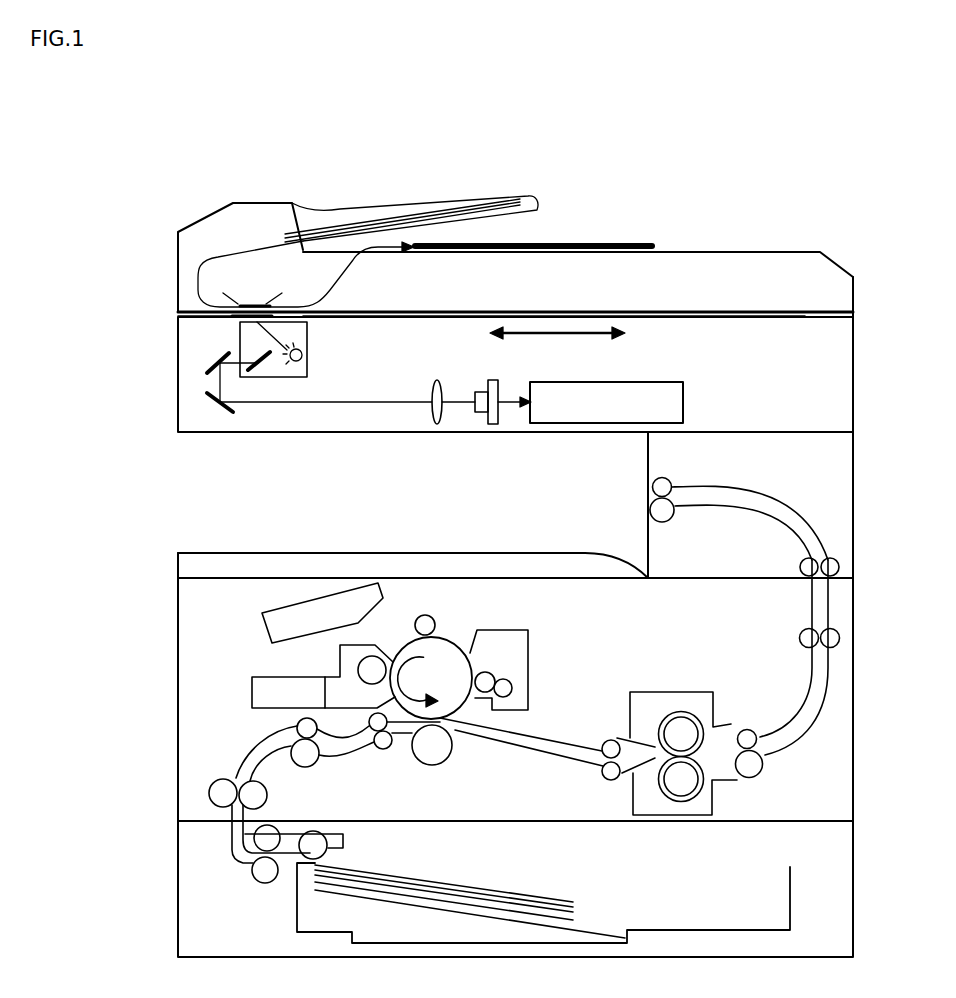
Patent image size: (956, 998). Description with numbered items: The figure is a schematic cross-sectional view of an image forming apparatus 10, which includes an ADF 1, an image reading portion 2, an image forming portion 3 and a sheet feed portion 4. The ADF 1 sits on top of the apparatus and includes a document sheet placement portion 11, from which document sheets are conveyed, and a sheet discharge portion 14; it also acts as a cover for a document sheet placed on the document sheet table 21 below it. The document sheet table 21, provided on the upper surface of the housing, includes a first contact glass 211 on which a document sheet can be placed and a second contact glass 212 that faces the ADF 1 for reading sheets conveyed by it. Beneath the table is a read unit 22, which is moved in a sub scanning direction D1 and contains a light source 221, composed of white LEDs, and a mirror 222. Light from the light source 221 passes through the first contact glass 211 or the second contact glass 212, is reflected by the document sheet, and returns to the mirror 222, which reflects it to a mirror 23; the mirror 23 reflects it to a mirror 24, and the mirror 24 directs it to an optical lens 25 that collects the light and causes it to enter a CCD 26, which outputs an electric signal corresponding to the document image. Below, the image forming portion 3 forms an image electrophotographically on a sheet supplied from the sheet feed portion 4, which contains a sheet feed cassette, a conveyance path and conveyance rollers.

The image forming apparatus 10 is at (170, 162).
The ADF 1 is at (178, 255).
The document sheet placement portion 11 is at (370, 206).
The sheet discharge portion 14 is at (702, 251).
The image reading portion 2 is at (178, 380).
The document sheet table 21 is at (824, 324).
The first contact glass 211 is at (703, 320).
The second contact glass 212 is at (232, 318).
The read unit 22 is at (308, 362).
The light source 221 is at (303, 353).
The mirror 222 is at (266, 362).
The mirror 23 is at (215, 364).
The mirror 24 is at (214, 402).
The optical lens 25 is at (440, 382).
The CCD 26 is at (495, 382).
The sub scanning direction D1 is at (556, 338).
The image forming portion 3 is at (197, 606).
The sheet feed portion 4 is at (178, 888).